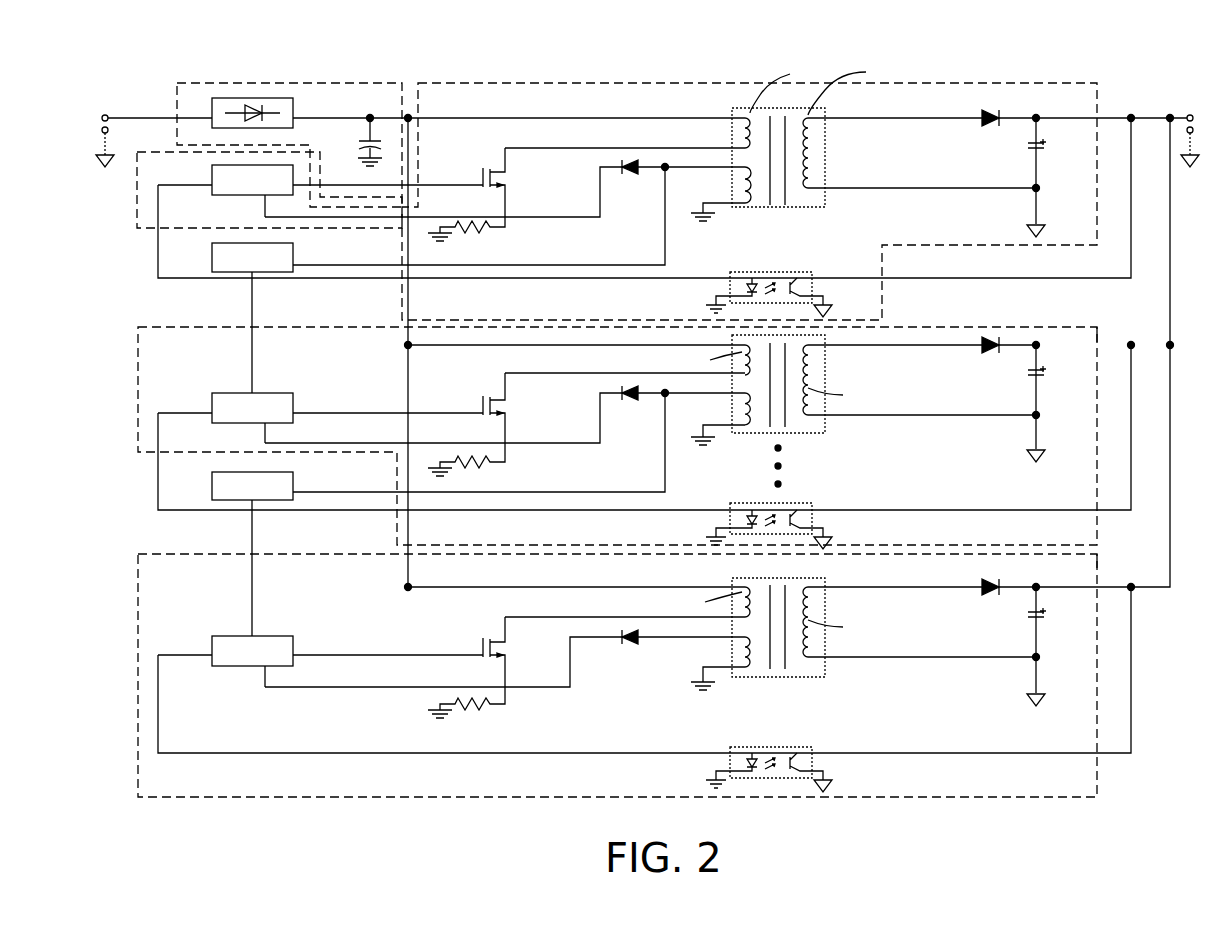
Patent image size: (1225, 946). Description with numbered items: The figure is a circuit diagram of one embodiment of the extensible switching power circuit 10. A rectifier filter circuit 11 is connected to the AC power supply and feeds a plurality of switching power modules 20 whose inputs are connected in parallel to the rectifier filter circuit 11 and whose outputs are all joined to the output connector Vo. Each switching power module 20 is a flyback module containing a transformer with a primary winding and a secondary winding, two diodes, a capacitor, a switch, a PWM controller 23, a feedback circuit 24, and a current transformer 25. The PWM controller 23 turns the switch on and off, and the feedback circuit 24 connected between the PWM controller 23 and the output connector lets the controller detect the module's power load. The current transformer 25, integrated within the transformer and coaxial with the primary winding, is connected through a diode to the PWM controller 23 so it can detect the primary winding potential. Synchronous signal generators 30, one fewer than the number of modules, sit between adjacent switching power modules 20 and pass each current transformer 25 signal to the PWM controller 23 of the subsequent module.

The extensible switching power circuit 10 is at (1066, 72).
The rectifier filter circuit 11 is at (315, 83).
The switching power module 20 is at (950, 83).
The PWM controller 23 is at (243, 190).
The feedback circuit 24 is at (804, 272).
The current transformer 25 is at (745, 208).
The synchronous signal generator 30 is at (238, 273).